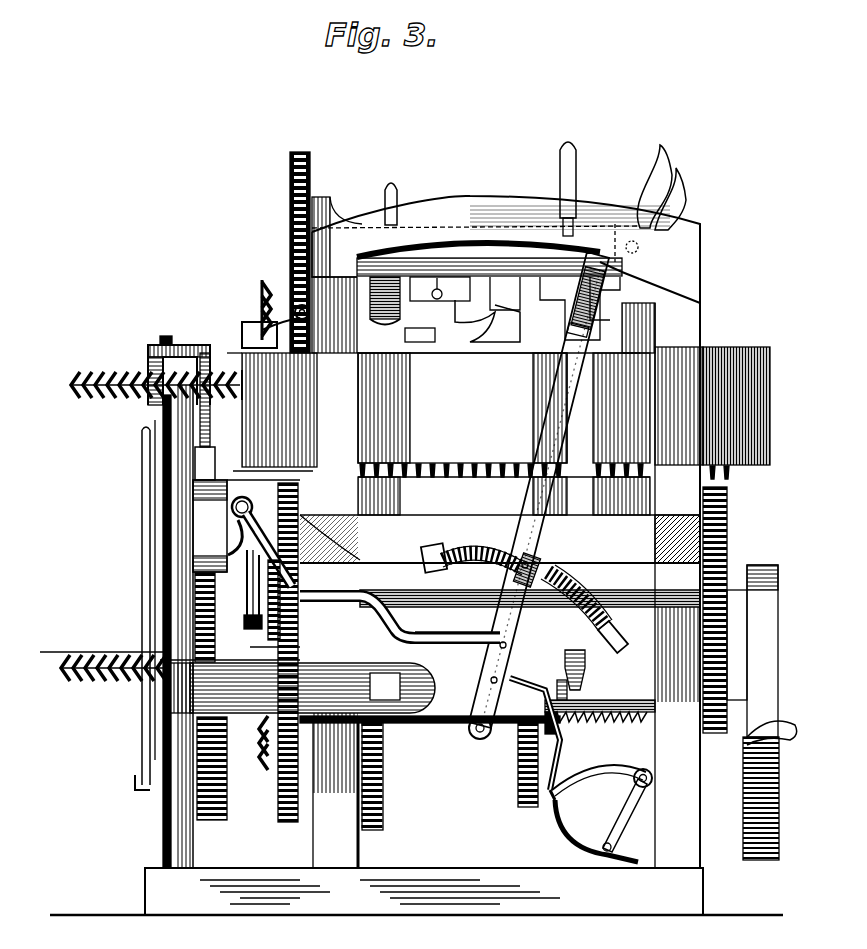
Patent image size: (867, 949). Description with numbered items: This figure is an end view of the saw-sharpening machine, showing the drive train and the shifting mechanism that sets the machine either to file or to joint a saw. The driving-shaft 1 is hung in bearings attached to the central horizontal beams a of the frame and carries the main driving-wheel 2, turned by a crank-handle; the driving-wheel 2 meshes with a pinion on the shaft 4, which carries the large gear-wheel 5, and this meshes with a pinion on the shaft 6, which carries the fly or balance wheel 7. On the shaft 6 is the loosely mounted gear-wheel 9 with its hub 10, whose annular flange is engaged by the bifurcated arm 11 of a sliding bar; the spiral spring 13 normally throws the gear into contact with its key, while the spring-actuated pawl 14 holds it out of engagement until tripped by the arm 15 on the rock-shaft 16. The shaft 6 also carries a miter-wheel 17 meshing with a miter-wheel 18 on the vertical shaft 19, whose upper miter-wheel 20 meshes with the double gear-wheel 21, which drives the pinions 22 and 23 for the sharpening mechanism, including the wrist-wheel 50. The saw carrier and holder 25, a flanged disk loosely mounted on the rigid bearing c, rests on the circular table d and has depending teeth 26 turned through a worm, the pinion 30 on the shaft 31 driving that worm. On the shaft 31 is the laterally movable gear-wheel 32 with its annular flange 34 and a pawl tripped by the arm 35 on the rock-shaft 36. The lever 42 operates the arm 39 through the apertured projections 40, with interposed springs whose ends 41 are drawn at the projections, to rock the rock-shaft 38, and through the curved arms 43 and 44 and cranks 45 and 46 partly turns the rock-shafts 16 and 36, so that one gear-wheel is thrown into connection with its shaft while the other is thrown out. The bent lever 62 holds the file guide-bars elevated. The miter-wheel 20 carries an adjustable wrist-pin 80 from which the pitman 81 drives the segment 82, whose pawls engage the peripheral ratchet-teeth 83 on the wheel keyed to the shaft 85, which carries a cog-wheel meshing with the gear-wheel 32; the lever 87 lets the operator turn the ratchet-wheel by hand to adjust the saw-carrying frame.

The driving-shaft 1 is at (572, 650).
The main driving-wheel 2 is at (729, 550).
The shaft 4 is at (612, 706).
The large gear-wheel 5 is at (384, 776).
The shaft 6 is at (406, 724).
The fly or balance wheel 7 is at (770, 767).
The gear-wheel 9 is at (518, 770).
The hub 10 is at (568, 692).
The bifurcated arm 11 is at (585, 668).
The spiral spring 13 is at (596, 730).
The spring-actuated pawl 14 is at (556, 748).
The arm 15 is at (599, 773).
The rock-shaft 16 is at (641, 769).
The miter-wheel 17 is at (262, 741).
The miter-wheel 18 is at (68, 652).
The vertical shaft 19 is at (168, 542).
The miter-wheel 20 is at (156, 371).
The double gear-wheel 21 is at (275, 304).
The pinion 22 is at (290, 240).
The pinion 23 is at (290, 178).
The saw carrier and holder 25 is at (446, 410).
The depending teeth 26 is at (413, 471).
The pinion 30 is at (512, 578).
The shaft 31 is at (408, 600).
The gear-wheel 32 is at (268, 625).
The annular flange 34 is at (252, 588).
The arm 35 is at (230, 547).
The rock-shaft 36 is at (243, 500).
The rock-shaft 38 is at (478, 737).
The arm 39 is at (500, 632).
The apertured projections 40 is at (460, 570).
The spring end 41 is at (526, 598).
The lever 42 is at (562, 441).
The curved arm 43 is at (437, 640).
The curved arm 44 is at (594, 826).
The crank 45 is at (269, 549).
The crank 46 is at (622, 815).
The wrist-wheel 50 is at (375, 320).
The bent lever 62 is at (390, 190).
The adjustable wrist-pin 80 is at (165, 338).
The pitman 81 is at (203, 348).
The segment 82 is at (205, 505).
The peripheral ratchet-teeth 83 is at (195, 608).
The shaft 85 is at (270, 647).
The lever 87 is at (155, 578).
The rigid bearing c is at (506, 249).
The circular table d is at (462, 520).
The central horizontal beams a is at (677, 539).